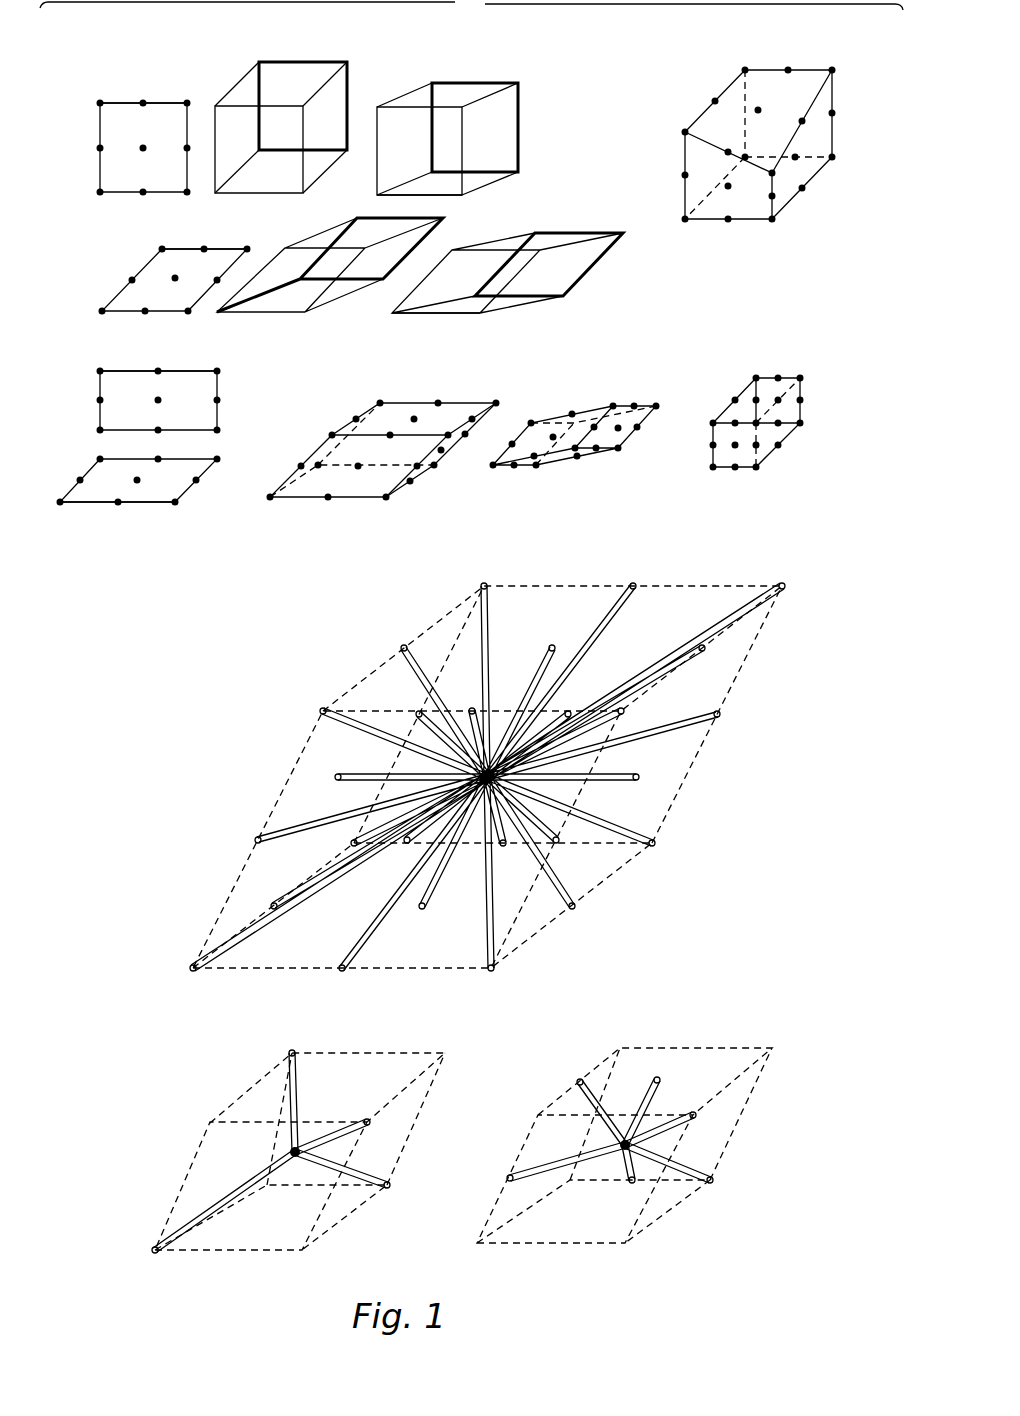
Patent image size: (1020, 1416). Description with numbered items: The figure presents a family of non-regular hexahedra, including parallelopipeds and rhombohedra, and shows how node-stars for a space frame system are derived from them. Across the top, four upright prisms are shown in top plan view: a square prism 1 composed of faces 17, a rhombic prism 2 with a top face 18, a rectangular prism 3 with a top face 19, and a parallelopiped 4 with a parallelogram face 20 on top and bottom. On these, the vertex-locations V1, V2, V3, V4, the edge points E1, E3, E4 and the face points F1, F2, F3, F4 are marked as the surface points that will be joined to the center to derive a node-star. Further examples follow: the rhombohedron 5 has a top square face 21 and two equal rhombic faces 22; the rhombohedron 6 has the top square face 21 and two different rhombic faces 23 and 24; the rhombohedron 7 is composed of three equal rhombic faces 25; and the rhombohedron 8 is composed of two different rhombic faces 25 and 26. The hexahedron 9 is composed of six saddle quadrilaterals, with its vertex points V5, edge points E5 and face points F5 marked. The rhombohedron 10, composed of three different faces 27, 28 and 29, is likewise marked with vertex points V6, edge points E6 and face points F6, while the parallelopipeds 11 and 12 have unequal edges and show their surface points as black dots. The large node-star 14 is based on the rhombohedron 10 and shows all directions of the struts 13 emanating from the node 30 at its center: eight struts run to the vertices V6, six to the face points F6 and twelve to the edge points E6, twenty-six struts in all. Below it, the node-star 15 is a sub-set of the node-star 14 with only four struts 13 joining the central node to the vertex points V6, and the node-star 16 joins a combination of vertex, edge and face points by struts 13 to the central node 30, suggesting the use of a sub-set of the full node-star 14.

The square prism 1 is at (140, 165).
The rhombic prism 2 is at (152, 301).
The rectangular prism 3 is at (154, 406).
The parallelopiped 4 is at (147, 518).
The rhombohedron 5 is at (364, 135).
The rhombohedron 6 is at (458, 155).
The rhombohedron 7 is at (415, 302).
The rhombohedron 8 is at (507, 300).
The hexahedron 9 is at (779, 162).
The rhombohedron 10 is at (478, 822).
The parallelopiped 11 is at (476, 501).
The parallelopiped 12 is at (668, 478).
The strut 13 is at (493, 668).
The node-star 14 is at (487, 903).
The node-star 15 is at (122, 1268).
The node-star 16 is at (440, 1243).
The face 17 is at (125, 128).
The top face 18 is at (167, 270).
The top face 19 is at (142, 390).
The parallelogram face 20 is at (105, 490).
The top square face 21 is at (292, 82).
The rhombic face 22 is at (228, 128).
The rhombic face 23 is at (393, 150).
The rhombic face 24 is at (449, 182).
The rhombic face 25 is at (283, 268).
The rhombic face 26 is at (474, 308).
The face 27 is at (360, 488).
The face 28 is at (451, 440).
The face 29 is at (455, 406).
The node 30 is at (484, 795).
The vertex-location V1 is at (97, 100).
The edge point E1 is at (96, 147).
The face point F1 is at (148, 151).
The vertex-location V2 is at (103, 305).
The face point F2 is at (183, 279).
The vertex-location V3 is at (105, 368).
The face point F3 is at (166, 400).
The edge point E3 is at (223, 400).
The face point F4 is at (146, 480).
The edge point E4 is at (204, 480).
The vertex-location V4 is at (176, 509).
The vertex point V5 is at (837, 67).
The edge point E5 is at (790, 67).
The face point F5 is at (758, 104).
The vertex point V6 is at (332, 430).
The edge point E6 is at (418, 470).
The face point F6 is at (414, 413).